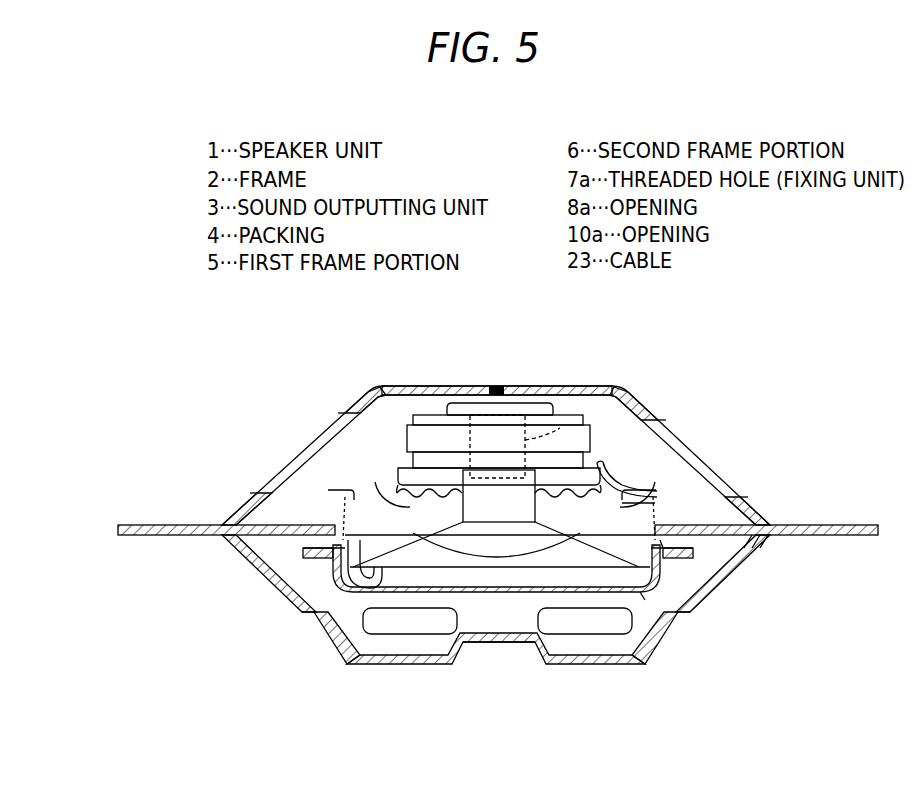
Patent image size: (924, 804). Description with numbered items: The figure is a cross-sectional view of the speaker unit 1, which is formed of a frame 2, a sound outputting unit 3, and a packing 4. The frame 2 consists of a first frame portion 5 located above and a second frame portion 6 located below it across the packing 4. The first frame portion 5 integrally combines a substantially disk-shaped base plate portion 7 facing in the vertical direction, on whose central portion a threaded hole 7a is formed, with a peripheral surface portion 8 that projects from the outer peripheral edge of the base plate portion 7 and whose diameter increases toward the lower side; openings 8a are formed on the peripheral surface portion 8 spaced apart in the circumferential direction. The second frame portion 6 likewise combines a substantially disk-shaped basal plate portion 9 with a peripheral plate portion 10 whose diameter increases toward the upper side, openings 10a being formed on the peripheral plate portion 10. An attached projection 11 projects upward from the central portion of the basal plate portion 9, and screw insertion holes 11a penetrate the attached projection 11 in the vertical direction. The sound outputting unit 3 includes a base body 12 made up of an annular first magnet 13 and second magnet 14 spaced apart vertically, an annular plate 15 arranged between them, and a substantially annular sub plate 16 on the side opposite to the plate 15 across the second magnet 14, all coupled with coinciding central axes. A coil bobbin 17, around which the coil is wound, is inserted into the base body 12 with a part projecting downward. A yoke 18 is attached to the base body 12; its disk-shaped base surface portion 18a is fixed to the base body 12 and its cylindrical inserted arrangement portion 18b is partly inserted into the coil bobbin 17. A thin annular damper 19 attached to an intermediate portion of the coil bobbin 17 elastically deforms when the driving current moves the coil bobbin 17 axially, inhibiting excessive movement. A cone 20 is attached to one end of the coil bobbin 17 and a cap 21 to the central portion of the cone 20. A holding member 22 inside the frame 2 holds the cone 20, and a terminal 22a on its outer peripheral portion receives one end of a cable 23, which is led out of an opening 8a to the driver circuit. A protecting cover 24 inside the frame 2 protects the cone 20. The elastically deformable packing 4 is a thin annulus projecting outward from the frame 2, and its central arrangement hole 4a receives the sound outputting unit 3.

The speaker unit 1 is at (742, 358).
The frame 2 is at (80, 483).
The sound outputting unit 3 is at (578, 400).
The packing 4 is at (856, 524).
The arrangement hole 4a is at (683, 497).
The first frame portion 5 is at (236, 505).
The second frame portion 6 is at (240, 560).
The base plate portion 7 is at (442, 387).
The threaded hole 7a is at (497, 388).
The peripheral surface portion 8 is at (353, 415).
The opening 8a is at (398, 440).
The basal plate portion 9 is at (440, 560).
The peripheral plate portion 10 is at (263, 577).
The opening 10a is at (298, 623).
The attached projection 11 is at (478, 644).
The screw insertion hole 11a is at (520, 644).
The base body 12 is at (430, 430).
The first magnet 13 is at (575, 432).
The second magnet 14 is at (610, 468).
The plate 15 is at (600, 452).
The sub plate 16 is at (604, 470).
The coil bobbin 17 is at (520, 516).
The yoke 18 is at (520, 405).
The base surface portion 18a is at (540, 412).
The inserted arrangement portion 18b is at (560, 428).
The damper 19 is at (352, 498).
The cone 20 is at (372, 580).
The cap 21 is at (447, 552).
The holding member 22 is at (655, 540).
The terminal 22a is at (668, 510).
The cable 23 is at (625, 503).
The protecting cover 24 is at (645, 603).